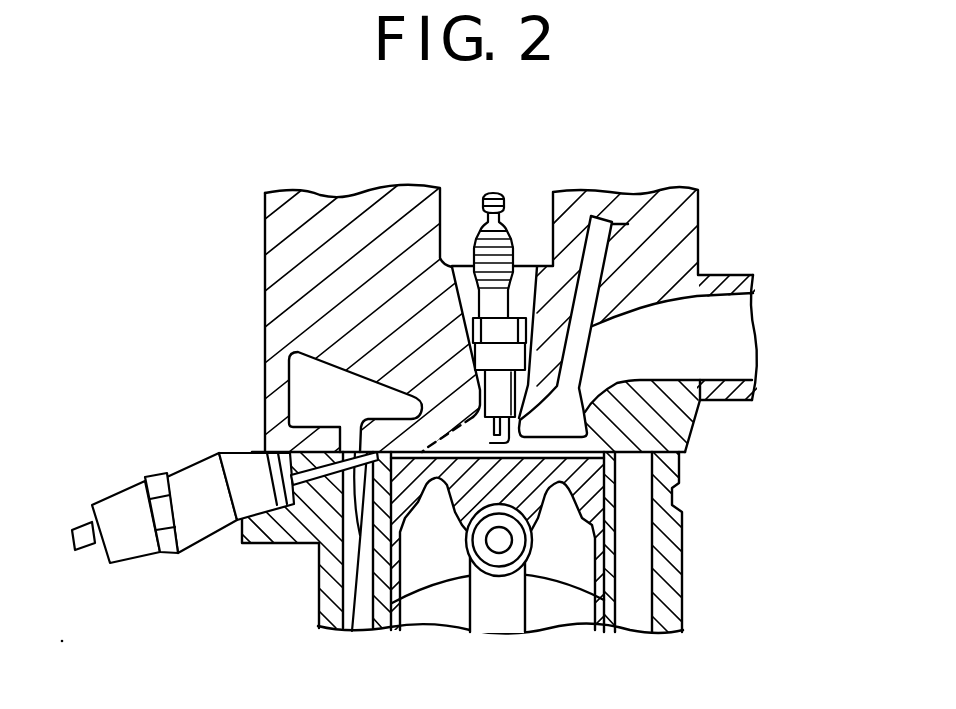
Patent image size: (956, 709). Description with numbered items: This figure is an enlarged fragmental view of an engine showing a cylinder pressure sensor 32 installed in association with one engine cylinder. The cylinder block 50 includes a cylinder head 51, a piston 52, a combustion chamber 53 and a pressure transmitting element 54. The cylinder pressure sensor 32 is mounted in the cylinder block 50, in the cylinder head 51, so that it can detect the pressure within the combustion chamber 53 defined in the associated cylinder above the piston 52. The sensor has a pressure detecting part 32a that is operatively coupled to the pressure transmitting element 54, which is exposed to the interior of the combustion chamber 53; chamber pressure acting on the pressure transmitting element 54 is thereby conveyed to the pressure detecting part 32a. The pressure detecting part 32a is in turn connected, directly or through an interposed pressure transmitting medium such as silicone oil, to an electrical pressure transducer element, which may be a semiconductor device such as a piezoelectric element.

The cylinder block 50 is at (684, 530).
The cylinder head 51 is at (265, 330).
The piston 52 is at (597, 567).
The combustion chamber 53 is at (466, 433).
The pressure transmitting element 54 is at (352, 632).
The cylinder pressure sensor 32 is at (215, 542).
The pressure detecting part 32a is at (267, 451).